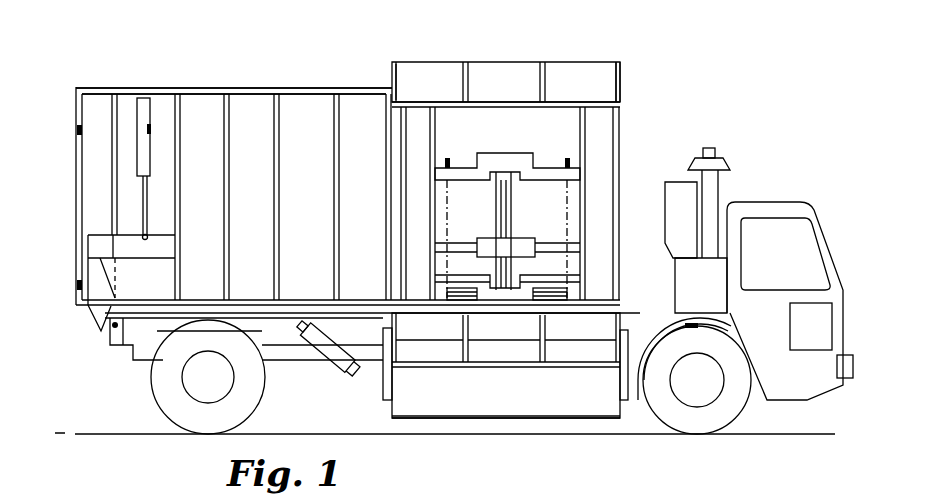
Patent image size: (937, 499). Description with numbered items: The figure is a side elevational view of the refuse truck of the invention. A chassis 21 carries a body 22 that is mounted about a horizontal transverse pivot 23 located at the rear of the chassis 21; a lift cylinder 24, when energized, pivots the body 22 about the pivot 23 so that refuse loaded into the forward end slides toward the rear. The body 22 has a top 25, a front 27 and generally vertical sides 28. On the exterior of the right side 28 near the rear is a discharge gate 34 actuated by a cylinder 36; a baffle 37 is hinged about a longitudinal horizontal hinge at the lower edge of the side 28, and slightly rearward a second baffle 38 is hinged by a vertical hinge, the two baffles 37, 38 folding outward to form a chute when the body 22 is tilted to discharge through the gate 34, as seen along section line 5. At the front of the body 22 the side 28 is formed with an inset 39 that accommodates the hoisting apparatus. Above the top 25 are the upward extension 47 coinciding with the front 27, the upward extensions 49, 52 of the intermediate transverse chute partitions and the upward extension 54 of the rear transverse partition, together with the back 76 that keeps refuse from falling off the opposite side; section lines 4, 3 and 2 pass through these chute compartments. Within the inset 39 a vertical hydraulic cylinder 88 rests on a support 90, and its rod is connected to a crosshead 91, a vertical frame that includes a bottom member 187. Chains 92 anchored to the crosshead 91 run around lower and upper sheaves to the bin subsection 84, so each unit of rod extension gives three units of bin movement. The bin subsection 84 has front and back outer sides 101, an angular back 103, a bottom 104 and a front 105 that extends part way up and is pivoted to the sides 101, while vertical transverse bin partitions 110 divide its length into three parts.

The section line 2- 2 is at (568, 57).
The section line 3- 3 is at (495, 57).
The section line 4- 4 is at (422, 55).
The section line 5- 5 is at (35, 110).
The chassis 21 is at (370, 367).
The body 22 is at (191, 78).
The pivot 23 is at (112, 328).
The lift cylinder 24 is at (323, 378).
The top 25 is at (258, 88).
The front 27 is at (618, 200).
The sides 28 is at (262, 212).
The discharge gate 34 is at (100, 248).
The cylinder 36 is at (139, 112).
The baffle 37 is at (147, 284).
The second baffle 38 is at (86, 322).
The inset 39 is at (605, 137).
The upward extension 47 is at (622, 82).
The upward extension 49 is at (546, 82).
The upward extension 52 is at (468, 78).
The upward extension 54 is at (388, 73).
The back 76 is at (450, 72).
The bin subsection 84 is at (500, 410).
The vertical hydraulic cylinder 88 is at (505, 213).
The support 90 is at (480, 282).
The crosshead 91 is at (495, 153).
The chains 92 is at (445, 205).
The outer sides 101 is at (385, 385).
The angular back 103 is at (480, 350).
The bottom 104 is at (508, 417).
The front 105 is at (580, 413).
The bin partitions 110 is at (398, 380).
The bottom member 187 is at (477, 243).